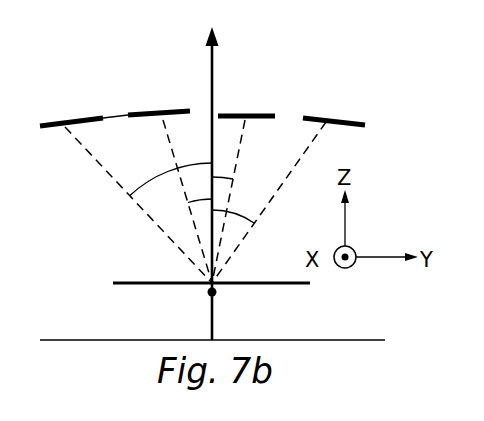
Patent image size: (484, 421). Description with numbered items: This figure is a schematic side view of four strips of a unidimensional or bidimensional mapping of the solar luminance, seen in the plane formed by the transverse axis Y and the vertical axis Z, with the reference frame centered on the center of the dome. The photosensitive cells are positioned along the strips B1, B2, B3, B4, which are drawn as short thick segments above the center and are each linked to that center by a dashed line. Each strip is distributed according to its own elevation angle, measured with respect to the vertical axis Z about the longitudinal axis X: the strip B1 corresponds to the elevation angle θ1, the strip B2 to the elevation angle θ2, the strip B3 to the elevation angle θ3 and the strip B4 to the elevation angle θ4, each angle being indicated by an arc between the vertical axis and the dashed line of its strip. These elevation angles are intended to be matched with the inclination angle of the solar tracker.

The strip B1 is at (126, 184).
The strip B2 is at (170, 182).
The strip B3 is at (243, 181).
The strip B4 is at (288, 184).
The elevation angle θ 1 is at (172, 170).
The elevation angle θ 2 is at (190, 201).
The elevation angle θ 3 is at (227, 178).
The elevation angle θ 4 is at (243, 215).